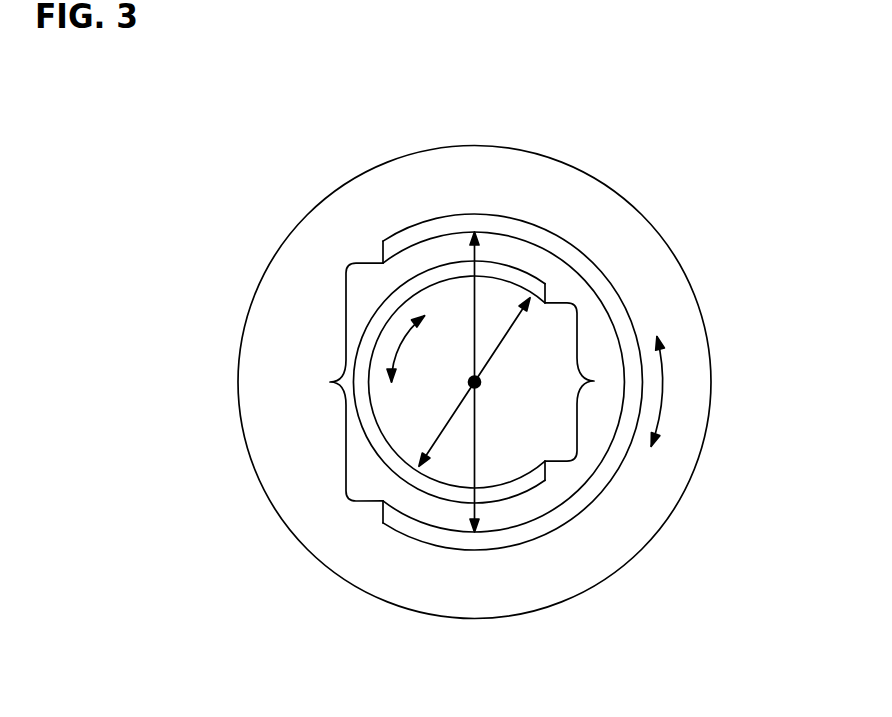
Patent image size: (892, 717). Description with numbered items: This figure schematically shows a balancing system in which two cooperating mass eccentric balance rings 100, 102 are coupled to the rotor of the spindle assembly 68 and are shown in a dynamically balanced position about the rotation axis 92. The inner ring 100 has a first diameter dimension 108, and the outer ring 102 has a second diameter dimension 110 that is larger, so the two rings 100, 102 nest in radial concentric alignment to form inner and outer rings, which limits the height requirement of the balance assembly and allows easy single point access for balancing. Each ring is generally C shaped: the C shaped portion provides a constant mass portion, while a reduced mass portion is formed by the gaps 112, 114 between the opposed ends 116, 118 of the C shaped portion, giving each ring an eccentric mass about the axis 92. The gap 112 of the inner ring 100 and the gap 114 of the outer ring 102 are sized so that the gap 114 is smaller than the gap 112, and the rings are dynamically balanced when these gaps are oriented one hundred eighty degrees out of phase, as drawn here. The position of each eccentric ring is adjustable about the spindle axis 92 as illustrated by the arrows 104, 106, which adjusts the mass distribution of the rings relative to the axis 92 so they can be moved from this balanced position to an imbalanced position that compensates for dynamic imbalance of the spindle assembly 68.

The spindle assembly 68 is at (658, 232).
The rotation axis 92 is at (474, 382).
The inner mass eccentric balance ring 100 is at (363, 422).
The outer mass eccentric balance ring 102 is at (503, 223).
The adjustment arrow for inner ring 104 is at (402, 343).
The adjustment arrow for outer ring 106 is at (662, 392).
The first diameter dimension 108 is at (450, 423).
The second diameter dimension 110 is at (477, 475).
The gap of inner ring 112 is at (578, 433).
The gap of outer ring 114 is at (345, 340).
The opposed end of C-shaped portion 116 is at (383, 240).
The opposed end of C-shaped portion 118 is at (383, 523).